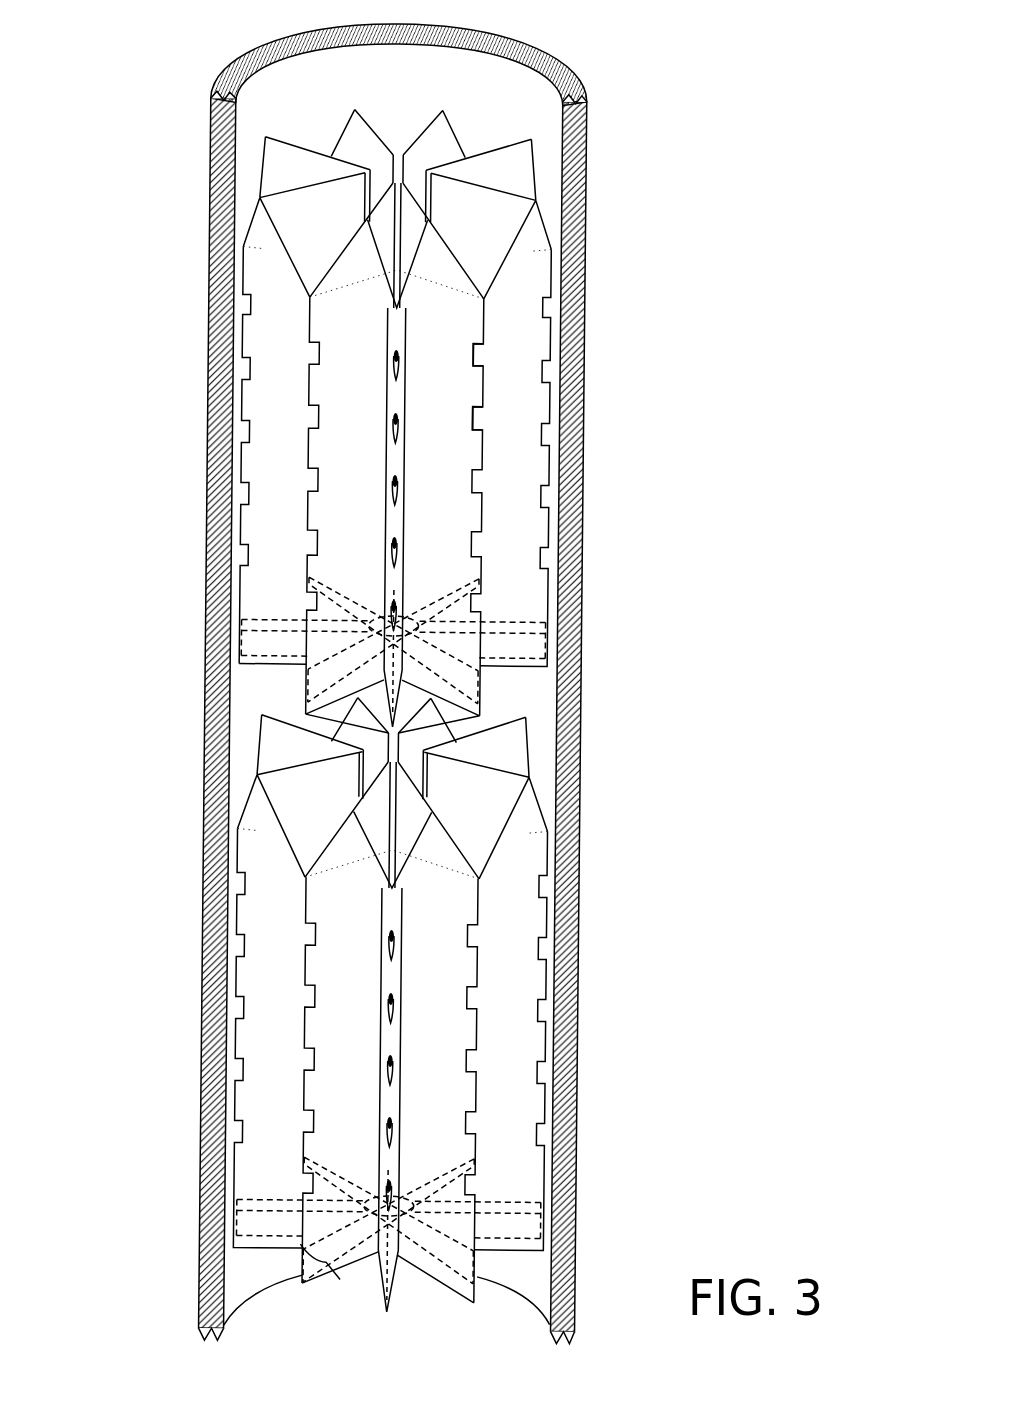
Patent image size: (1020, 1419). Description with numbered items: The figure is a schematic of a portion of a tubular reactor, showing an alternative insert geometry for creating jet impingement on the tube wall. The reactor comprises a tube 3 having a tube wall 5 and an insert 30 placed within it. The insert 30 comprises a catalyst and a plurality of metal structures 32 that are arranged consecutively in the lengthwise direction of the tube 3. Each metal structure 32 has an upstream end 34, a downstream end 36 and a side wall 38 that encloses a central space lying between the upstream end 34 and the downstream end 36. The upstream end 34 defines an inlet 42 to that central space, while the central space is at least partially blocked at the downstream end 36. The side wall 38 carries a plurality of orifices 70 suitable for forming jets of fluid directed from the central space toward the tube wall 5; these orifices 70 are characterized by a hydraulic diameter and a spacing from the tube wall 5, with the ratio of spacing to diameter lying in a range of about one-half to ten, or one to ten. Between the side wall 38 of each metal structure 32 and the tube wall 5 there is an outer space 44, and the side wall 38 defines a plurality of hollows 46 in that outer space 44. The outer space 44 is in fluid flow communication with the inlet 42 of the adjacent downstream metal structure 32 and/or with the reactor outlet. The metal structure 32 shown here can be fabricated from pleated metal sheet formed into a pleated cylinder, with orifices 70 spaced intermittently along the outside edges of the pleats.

The tube 3 is at (376, 672).
The tube wall 5 is at (219, 159).
The insert 30 is at (512, 462).
The metal structures 32 is at (518, 532).
The upstream end 34 is at (400, 368).
The downstream end 36 is at (518, 697).
The side wall 38 is at (261, 403).
The inlet 42 is at (394, 120).
The outer space 44 is at (237, 465).
The hollows 46 is at (272, 668).
The orifices 70 is at (482, 352).